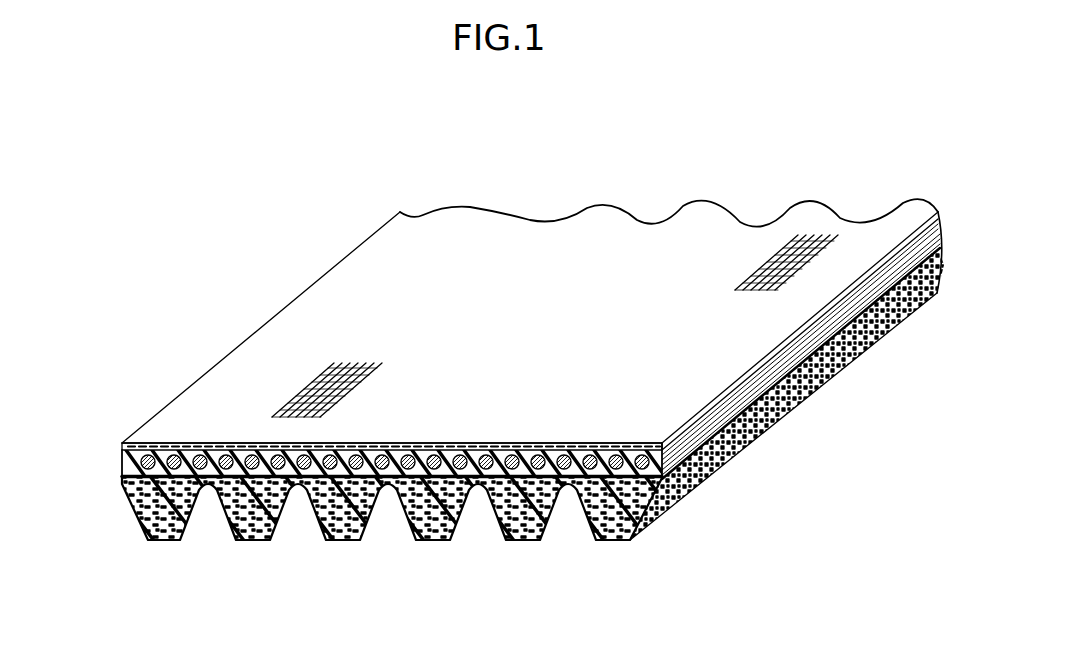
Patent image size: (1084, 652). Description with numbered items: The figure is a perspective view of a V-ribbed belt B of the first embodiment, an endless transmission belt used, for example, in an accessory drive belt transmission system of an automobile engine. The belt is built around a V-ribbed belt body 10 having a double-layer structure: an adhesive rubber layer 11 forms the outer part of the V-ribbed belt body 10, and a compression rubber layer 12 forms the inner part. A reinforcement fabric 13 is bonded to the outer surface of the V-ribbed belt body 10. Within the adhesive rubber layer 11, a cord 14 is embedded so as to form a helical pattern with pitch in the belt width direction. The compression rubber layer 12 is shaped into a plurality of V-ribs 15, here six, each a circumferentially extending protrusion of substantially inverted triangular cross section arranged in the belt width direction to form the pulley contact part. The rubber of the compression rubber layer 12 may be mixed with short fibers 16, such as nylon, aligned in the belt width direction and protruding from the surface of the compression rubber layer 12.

The V-ribbed belt B is at (408, 163).
The V-ribbed belt body 10 is at (298, 294).
The adhesive rubber layer 11 is at (122, 445).
The compression rubber layer 12 is at (655, 506).
The reinforcement fabric 13 is at (448, 446).
The cord 14 is at (121, 462).
The V-ribs 15 is at (163, 543).
The short fibers 16 is at (150, 522).